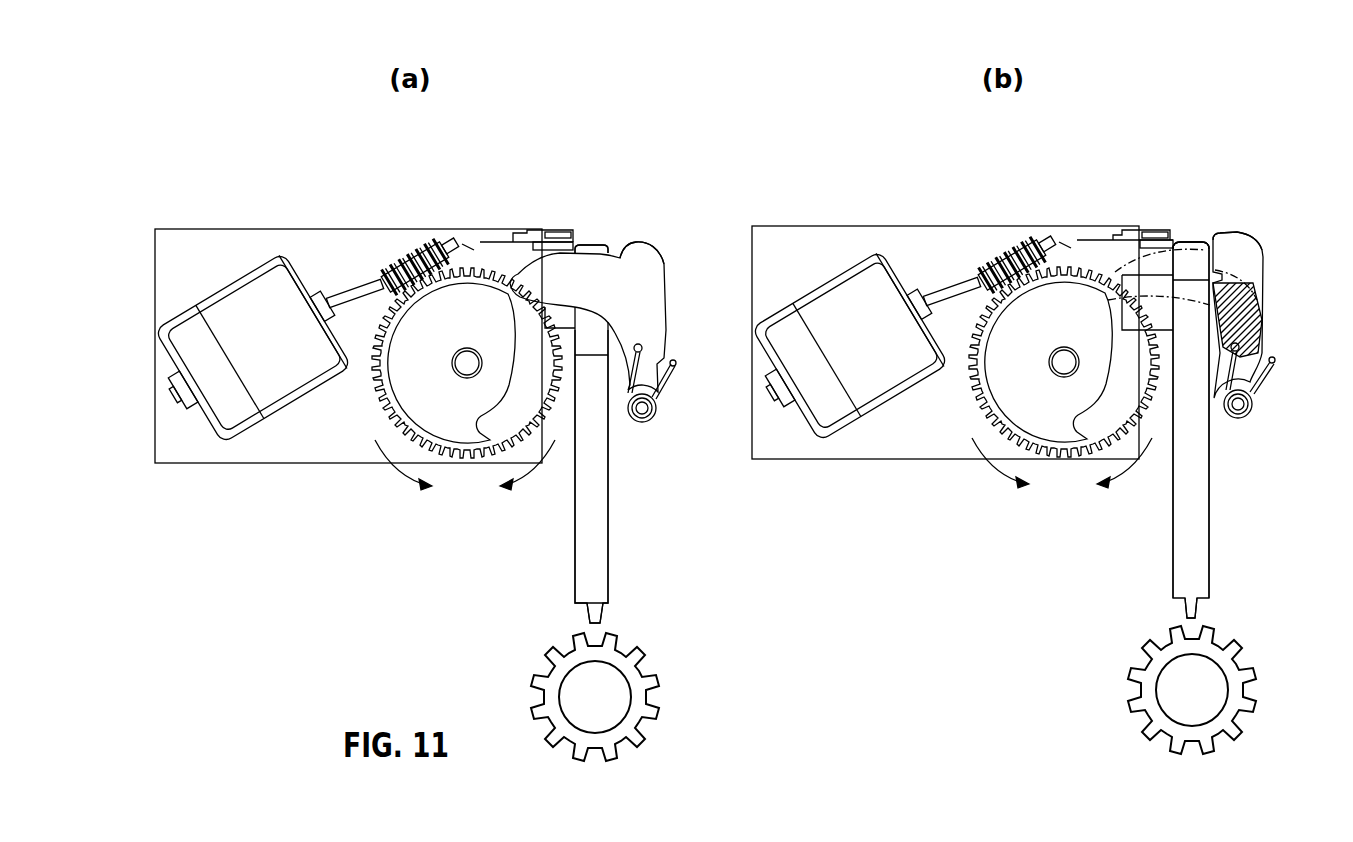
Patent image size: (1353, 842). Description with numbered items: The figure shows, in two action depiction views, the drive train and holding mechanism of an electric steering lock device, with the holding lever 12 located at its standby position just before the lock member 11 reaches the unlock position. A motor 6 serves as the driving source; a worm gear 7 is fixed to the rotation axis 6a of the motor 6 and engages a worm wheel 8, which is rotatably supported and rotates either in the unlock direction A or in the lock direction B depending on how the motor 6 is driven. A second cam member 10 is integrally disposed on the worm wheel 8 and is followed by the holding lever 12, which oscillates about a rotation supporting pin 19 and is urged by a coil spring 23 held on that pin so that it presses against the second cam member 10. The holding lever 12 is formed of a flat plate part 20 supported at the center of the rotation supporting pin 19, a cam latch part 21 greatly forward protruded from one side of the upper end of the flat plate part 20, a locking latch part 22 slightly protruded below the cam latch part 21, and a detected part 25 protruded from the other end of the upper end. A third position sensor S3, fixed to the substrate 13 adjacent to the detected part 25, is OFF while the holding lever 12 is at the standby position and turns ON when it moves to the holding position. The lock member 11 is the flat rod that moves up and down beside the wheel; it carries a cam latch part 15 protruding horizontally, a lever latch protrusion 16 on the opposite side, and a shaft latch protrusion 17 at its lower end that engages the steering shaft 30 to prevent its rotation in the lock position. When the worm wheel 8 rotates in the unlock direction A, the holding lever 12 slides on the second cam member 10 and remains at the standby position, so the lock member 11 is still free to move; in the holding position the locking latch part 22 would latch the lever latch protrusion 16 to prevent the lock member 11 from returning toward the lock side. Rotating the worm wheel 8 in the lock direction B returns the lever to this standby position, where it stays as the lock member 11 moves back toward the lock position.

The motor 6 is at (228, 262).
The rotation axis 6a is at (338, 292).
The worm gear 7 is at (405, 236).
The worm wheel 8 is at (480, 256).
The second cam member 10 is at (407, 390).
The lock member 11 is at (614, 540).
The holding lever 12 is at (670, 270).
The rotation substrate 13 is at (287, 463).
The cam latch part 15 is at (498, 242).
The lever latch protrusion 16 is at (590, 246).
The shaft latch protrusion 17 is at (590, 612).
The rotation supporting pin 19 is at (660, 420).
The flat plate part 20 is at (605, 487).
The cam latch part 21 is at (540, 250).
The locking latch part 22 is at (1265, 300).
The coil spring 23 is at (674, 372).
The detected part 25 is at (640, 240).
The steering shaft 30 is at (628, 695).
The third position sensor S3 is at (565, 232).
The unlock direction A is at (702, 485).
The lock direction B is at (826, 485).